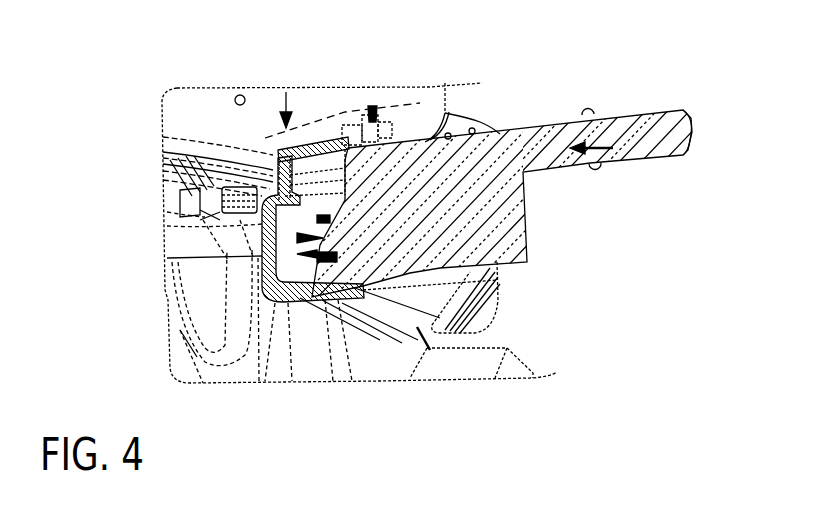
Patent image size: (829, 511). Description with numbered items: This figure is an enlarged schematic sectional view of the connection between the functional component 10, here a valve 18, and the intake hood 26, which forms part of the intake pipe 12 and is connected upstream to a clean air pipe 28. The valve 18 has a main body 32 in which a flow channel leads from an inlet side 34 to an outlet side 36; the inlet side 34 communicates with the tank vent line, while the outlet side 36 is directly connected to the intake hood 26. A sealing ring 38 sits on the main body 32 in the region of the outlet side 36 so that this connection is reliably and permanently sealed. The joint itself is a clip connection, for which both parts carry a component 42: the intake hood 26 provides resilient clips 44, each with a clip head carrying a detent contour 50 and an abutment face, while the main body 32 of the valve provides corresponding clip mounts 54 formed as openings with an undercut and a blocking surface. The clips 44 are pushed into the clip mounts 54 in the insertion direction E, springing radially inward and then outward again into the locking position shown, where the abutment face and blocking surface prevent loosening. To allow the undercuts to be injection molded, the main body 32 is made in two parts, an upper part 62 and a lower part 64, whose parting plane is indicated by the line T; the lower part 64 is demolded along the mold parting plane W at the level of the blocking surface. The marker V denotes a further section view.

The functional component 10 is at (475, 169).
The valve 18 is at (475, 169).
The intake pipe 12 is at (179, 316).
The intake hood 26 is at (180, 296).
The clean air pipe 28 is at (178, 110).
The main body 32 is at (556, 130).
The inlet side 34 is at (692, 128).
The outlet side 36 is at (280, 290).
The sealing ring 38 is at (330, 292).
The component for creating the clip connection 42 is at (305, 83).
The clips 44 is at (332, 124).
The clip mounts 54 is at (278, 148).
The detent contour 50 is at (372, 105).
The upper part 62 is at (382, 138).
The lower part 64 is at (418, 335).
The parting plane line T is at (385, 189).
The mold parting plane W is at (420, 150).
The section plane V is at (447, 112).
The insertion direction E is at (684, 200).